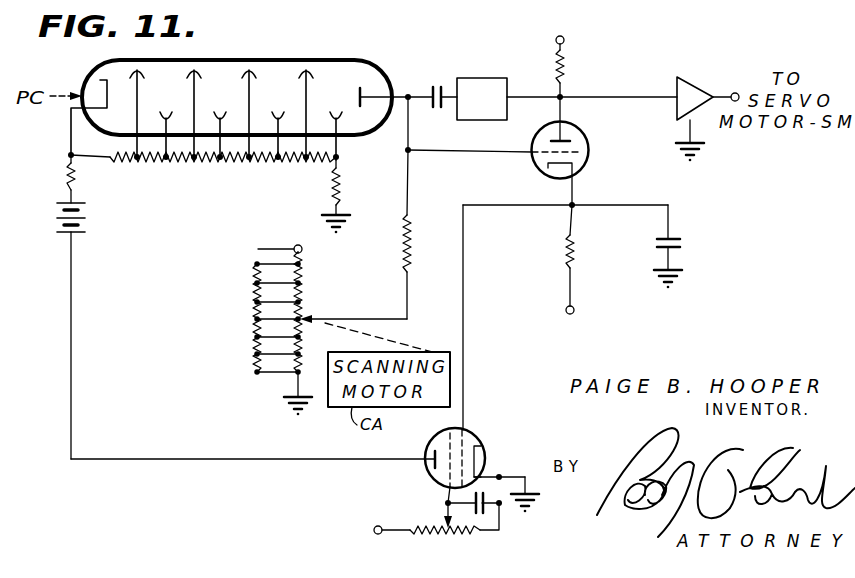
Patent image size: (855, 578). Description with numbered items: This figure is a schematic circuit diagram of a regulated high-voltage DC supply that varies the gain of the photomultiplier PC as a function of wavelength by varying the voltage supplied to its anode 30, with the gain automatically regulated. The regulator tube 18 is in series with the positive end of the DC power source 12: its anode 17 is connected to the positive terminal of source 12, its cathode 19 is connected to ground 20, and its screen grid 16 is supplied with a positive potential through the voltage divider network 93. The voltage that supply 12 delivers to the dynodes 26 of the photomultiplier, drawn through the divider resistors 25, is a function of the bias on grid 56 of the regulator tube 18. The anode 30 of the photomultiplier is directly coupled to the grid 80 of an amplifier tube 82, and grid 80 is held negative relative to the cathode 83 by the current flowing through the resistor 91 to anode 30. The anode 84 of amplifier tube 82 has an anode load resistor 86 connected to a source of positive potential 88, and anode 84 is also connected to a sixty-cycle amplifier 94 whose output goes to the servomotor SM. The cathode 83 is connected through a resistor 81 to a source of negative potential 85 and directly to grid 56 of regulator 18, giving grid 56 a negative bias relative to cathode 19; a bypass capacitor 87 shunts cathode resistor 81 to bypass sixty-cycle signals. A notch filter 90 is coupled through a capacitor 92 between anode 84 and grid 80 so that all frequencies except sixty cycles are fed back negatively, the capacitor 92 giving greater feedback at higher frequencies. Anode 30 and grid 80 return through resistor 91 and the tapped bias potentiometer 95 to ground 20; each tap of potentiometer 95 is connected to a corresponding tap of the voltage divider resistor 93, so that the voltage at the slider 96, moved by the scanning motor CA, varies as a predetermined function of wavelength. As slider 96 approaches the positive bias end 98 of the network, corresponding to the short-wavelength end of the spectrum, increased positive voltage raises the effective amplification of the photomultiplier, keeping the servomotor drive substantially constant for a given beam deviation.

The DC power source 12 is at (82, 220).
The screen grid 16 is at (449, 482).
The anode 17 is at (432, 463).
The regulator tube 18 is at (484, 431).
The cathode 19 is at (482, 454).
The ground 20 is at (296, 397).
The voltage divider resistors 25 is at (332, 185).
The dynodes 26 is at (279, 112).
The anode 30 is at (365, 93).
The grid 56 is at (451, 437).
The grid 80 is at (533, 160).
The resistor 81 is at (567, 252).
The amplifier tube 82 is at (596, 165).
The cathode 83 is at (555, 165).
The anode 84 is at (566, 139).
The source of negative potential 85 is at (575, 307).
The anode load resistor 86 is at (566, 75).
The bypass capacitor 87 is at (683, 243).
The source of positive potential 88 is at (565, 42).
The notch filter 90 is at (497, 78).
The resistor 91 is at (410, 240).
The capacitor 92 is at (437, 85).
The voltage divider resistor 93 is at (370, 401).
The 60-c.p.s. amplifier 94 is at (697, 85).
The bias potentiometer 95 is at (312, 272).
The slider 96 is at (326, 317).
The positive bias end 98 is at (276, 243).